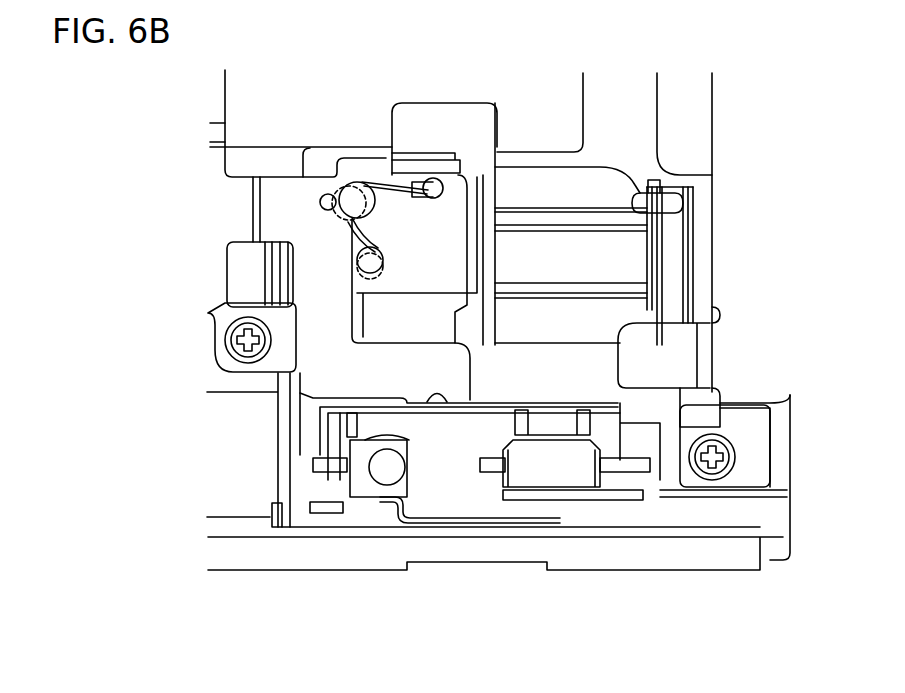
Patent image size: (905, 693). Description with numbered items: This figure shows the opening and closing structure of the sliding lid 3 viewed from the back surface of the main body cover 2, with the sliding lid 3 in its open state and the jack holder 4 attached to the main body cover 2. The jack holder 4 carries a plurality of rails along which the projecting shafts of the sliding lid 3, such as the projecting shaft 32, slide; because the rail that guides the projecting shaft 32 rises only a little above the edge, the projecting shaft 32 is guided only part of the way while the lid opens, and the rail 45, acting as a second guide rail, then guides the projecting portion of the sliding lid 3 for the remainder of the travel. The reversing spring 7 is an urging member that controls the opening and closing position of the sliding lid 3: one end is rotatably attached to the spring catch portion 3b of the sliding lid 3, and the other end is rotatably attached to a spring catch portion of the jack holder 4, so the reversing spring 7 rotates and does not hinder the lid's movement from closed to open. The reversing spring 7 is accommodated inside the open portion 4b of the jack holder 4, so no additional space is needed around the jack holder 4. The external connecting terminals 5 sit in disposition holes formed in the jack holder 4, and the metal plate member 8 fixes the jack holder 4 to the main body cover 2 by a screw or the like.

The main body cover 2 is at (607, 143).
The sliding lid 3 is at (560, 190).
The projecting shaft 32 is at (668, 197).
The spring catch portion 3b is at (417, 187).
The jack holder 4 is at (450, 135).
The open portion 4b is at (472, 222).
The rail 45 is at (496, 257).
The external connecting terminals 5 is at (542, 473).
The reversing spring 7 is at (350, 247).
The metal plate member 8 is at (287, 212).